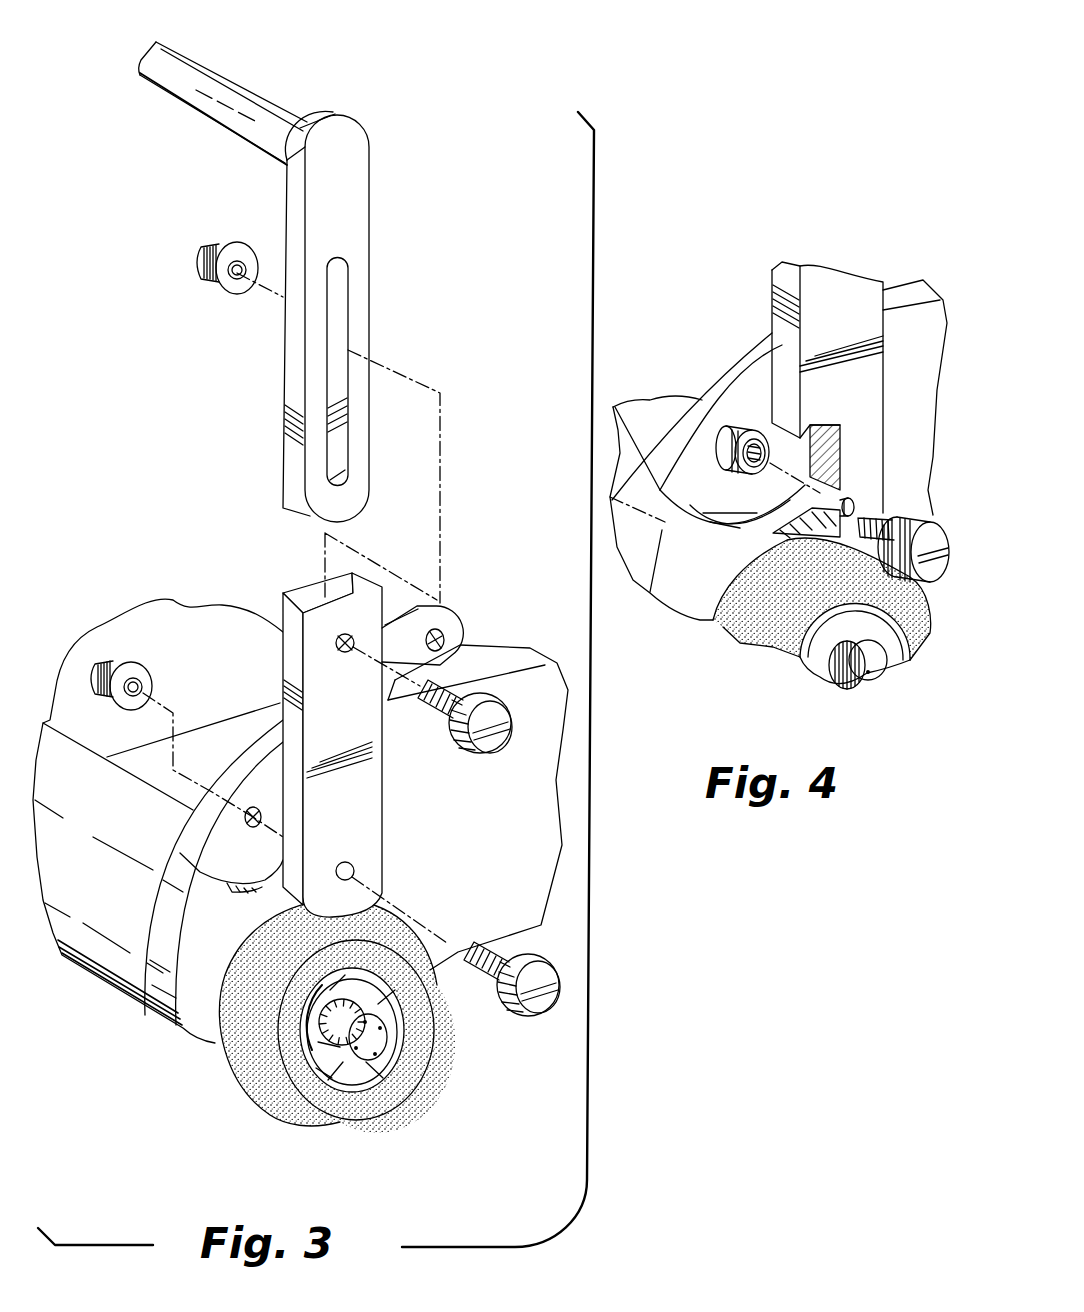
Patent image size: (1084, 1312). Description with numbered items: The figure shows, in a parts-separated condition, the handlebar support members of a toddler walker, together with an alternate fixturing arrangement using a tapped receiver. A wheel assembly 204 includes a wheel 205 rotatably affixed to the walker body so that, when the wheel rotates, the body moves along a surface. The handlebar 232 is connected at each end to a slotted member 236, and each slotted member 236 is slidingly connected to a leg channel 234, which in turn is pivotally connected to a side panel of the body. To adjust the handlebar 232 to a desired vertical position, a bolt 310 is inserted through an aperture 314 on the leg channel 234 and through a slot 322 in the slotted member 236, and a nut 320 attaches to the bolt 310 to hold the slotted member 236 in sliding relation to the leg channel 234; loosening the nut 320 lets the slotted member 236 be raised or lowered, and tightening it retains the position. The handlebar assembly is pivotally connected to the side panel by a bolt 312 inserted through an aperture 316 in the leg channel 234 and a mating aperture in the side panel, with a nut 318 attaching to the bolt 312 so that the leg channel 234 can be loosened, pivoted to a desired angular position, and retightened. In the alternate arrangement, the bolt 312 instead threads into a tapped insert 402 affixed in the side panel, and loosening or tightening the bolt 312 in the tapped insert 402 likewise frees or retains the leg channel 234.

In FIG. 3, the wheel assembly 204 is at (295, 1033).
In FIG. 3, the wheel 205 is at (392, 1082).
In FIG. 3, the handlebar 232 is at (235, 107).
In FIG. 3, the leg channel 234 is at (373, 745).
In FIG. 4, the leg channel 234 is at (840, 293).
In FIG. 3, the slotted member 236 is at (350, 160).
In FIG. 3, the bolt 310 is at (497, 740).
In FIG. 3, the bolt 312 is at (517, 1014).
In FIG. 4, the bolt 312 is at (922, 518).
In FIG. 3, the aperture 314 is at (350, 654).
In FIG. 3, the aperture 316 is at (355, 870).
In FIG. 3, the nut 318 is at (108, 657).
In FIG. 3, the nut 320 is at (208, 242).
In FIG. 3, the slot 322 is at (333, 307).
In FIG. 4, the tapped insert 402 is at (735, 423).